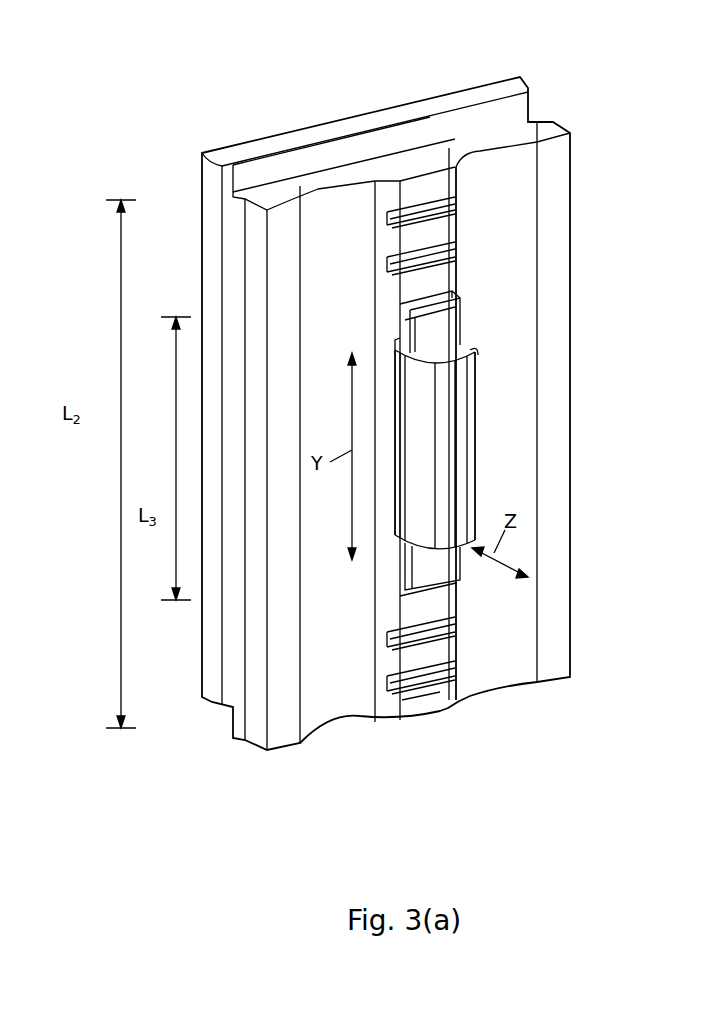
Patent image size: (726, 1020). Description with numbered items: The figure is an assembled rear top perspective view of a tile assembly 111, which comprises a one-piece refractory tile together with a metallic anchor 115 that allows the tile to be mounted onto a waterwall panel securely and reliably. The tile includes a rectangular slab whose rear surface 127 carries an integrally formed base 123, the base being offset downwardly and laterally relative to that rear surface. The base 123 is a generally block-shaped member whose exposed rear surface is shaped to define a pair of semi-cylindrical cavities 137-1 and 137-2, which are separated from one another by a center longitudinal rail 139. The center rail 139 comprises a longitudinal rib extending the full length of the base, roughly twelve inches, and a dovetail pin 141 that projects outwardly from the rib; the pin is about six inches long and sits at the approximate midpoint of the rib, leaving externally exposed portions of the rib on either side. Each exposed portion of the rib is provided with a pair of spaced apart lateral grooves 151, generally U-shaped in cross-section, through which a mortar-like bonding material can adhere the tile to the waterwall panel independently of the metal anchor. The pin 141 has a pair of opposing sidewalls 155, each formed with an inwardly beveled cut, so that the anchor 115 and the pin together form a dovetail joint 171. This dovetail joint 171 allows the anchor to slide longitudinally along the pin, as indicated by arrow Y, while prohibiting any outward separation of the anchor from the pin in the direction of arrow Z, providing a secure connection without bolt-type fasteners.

The tile assembly 111 is at (449, 415).
The metallic anchor 115 is at (474, 426).
The base 123 is at (449, 382).
The rear surface 127 is at (480, 117).
The semi-cylindrical cavity 137-1 is at (328, 200).
The semi-cylindrical cavity 137-2 is at (507, 153).
The center longitudinal rail 139 is at (365, 700).
The dovetail pin 141 is at (452, 332).
The lateral grooves 151 is at (418, 257).
The sidewall 155 is at (407, 580).
The dovetail joint 171 is at (392, 338).